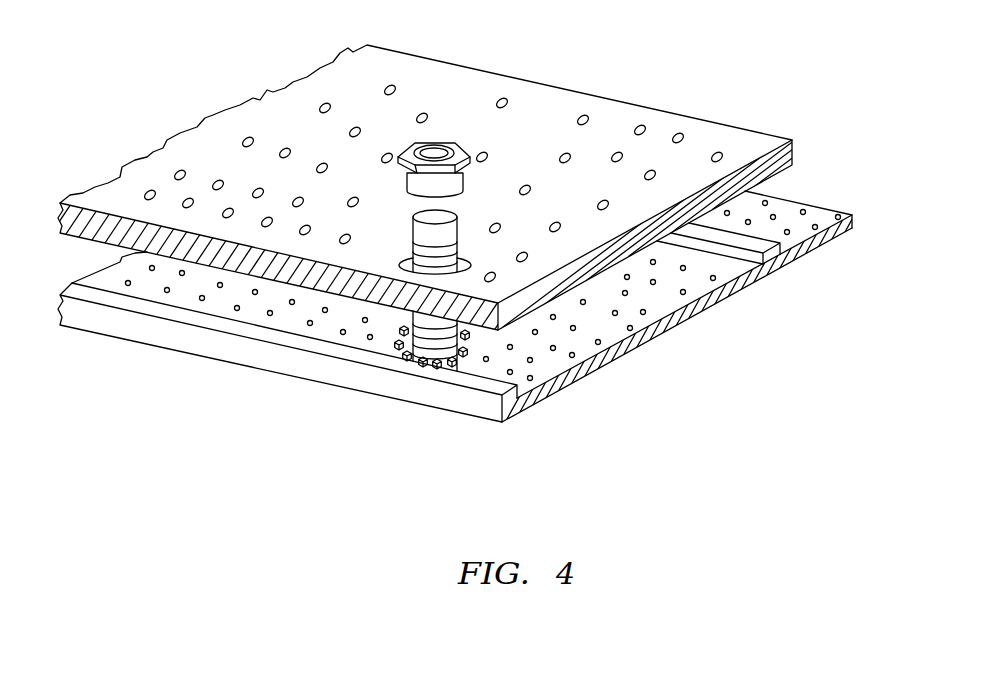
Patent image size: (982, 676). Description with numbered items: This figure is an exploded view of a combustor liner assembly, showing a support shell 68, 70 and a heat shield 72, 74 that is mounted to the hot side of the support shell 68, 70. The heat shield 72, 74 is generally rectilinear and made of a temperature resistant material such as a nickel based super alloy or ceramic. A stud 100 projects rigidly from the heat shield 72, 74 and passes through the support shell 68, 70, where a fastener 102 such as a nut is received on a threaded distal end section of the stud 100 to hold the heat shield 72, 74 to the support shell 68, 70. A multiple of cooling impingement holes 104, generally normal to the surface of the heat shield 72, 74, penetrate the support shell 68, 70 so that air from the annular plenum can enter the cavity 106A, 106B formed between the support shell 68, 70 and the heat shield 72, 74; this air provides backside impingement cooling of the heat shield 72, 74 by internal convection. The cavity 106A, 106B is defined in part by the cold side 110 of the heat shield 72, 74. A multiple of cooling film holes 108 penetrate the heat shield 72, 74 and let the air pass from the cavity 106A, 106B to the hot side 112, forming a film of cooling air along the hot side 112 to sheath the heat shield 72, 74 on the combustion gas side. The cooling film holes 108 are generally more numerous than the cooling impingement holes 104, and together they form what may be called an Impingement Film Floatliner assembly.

The outer support shell 68 is at (504, 183).
The inner support shell 70 is at (504, 183).
The heat shield 72 is at (513, 335).
The heat shield 74 is at (513, 335).
The stud 100 is at (448, 220).
The fastener 102 is at (450, 152).
The cooling impingement hole 104 is at (251, 137).
The cavity 106A is at (483, 292).
The cavity 106B is at (653, 295).
The cooling film hole 108 is at (603, 343).
The cold side 110 is at (548, 358).
The hot side 112 is at (518, 416).